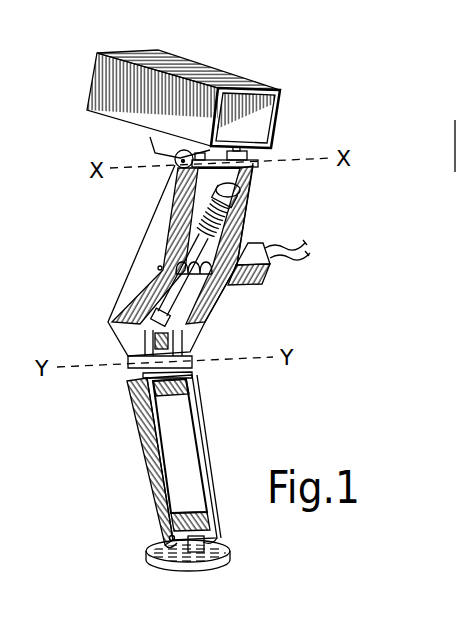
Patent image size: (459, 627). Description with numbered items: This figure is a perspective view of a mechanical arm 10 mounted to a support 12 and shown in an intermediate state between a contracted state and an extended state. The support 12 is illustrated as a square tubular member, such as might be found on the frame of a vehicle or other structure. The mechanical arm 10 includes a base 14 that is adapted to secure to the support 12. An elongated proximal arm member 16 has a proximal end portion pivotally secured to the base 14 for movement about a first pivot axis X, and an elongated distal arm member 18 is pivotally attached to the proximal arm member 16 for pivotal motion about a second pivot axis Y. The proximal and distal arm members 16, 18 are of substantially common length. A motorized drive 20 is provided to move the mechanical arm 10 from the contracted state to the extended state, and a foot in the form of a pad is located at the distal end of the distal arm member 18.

The mechanical arm 10 is at (290, 217).
The support 12 is at (180, 63).
The base 14 is at (140, 153).
The proximal arm member 16 is at (128, 257).
The distal arm member 18 is at (128, 459).
The motorized drive 20 is at (252, 292).